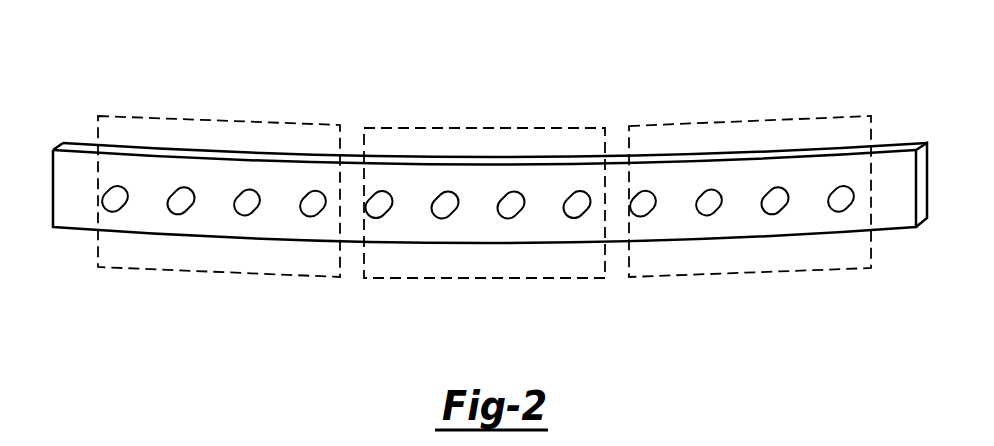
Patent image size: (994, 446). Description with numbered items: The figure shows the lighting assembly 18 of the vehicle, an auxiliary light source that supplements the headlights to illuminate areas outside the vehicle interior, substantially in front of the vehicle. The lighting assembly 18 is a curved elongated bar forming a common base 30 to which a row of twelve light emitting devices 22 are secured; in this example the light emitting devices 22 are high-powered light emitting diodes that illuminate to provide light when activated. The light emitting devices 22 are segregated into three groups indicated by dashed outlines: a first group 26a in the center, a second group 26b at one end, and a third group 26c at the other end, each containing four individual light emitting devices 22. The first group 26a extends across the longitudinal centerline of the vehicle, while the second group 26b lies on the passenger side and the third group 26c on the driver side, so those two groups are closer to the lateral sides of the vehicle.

The lighting assembly 18 is at (490, 207).
The light emitting devices 22 is at (250, 197).
The first group 26a is at (540, 128).
The second group 26b is at (243, 120).
The third group 26c is at (698, 123).
The common base 30 is at (303, 158).